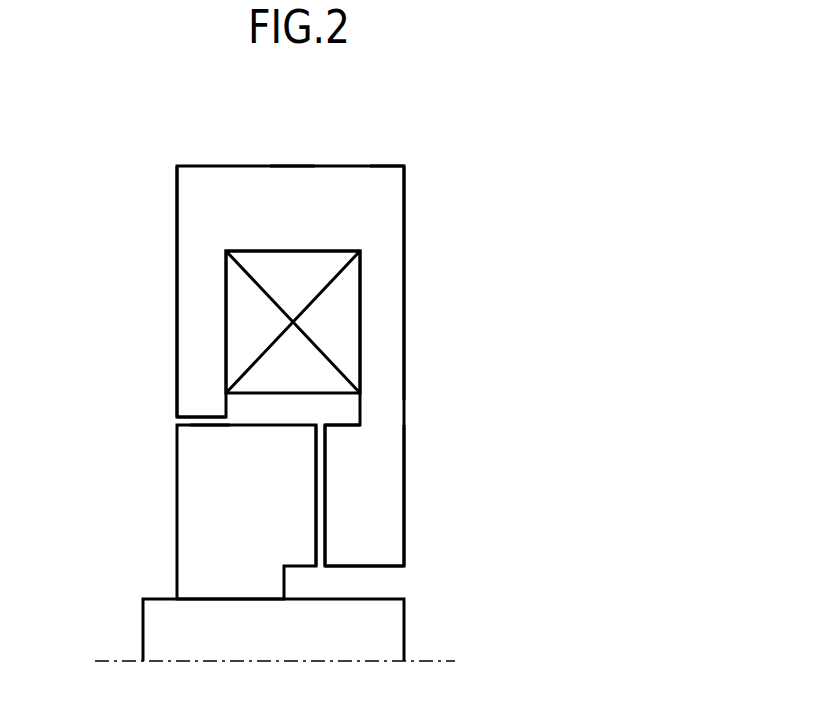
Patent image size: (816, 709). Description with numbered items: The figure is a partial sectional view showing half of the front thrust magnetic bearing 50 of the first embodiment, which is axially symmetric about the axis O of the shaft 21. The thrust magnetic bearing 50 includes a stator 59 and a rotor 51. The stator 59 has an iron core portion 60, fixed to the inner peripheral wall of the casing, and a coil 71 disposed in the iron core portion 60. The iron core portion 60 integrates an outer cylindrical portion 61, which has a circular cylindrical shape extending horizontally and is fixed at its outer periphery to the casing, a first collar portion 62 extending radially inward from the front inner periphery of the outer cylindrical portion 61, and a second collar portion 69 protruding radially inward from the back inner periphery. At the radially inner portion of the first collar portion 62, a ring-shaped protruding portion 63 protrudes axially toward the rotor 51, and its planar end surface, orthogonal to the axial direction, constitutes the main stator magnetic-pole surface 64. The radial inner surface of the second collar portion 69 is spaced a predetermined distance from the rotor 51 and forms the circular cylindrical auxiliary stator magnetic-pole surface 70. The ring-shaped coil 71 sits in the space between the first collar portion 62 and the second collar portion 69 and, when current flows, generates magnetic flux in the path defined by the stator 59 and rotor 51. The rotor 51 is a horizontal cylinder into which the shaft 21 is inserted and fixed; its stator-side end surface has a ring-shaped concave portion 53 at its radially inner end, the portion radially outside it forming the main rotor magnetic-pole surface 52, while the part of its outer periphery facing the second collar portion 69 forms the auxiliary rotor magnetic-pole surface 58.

The thrust magnetic bearing 50 is at (185, 140).
The stator 59 is at (290, 160).
The iron core portion 60 is at (388, 160).
The outer cylindrical portion 61 is at (379, 197).
The first collar portion 62 is at (379, 327).
The second collar portion 69 is at (192, 298).
The auxiliary stator magnetic-pole surface 70 is at (177, 420).
The coil 71 is at (298, 272).
The rotor 51 is at (172, 486).
The auxiliary rotor magnetic-pole surface 58 is at (203, 425).
The main rotor magnetic-pole surface 52 is at (320, 527).
The main stator magnetic-pole surface 64 is at (328, 457).
The ring-shaped protruding portion 63 is at (340, 452).
The ring-shaped concave portion 53 is at (285, 583).
The shaft 21 is at (162, 618).
The axis O is at (108, 657).